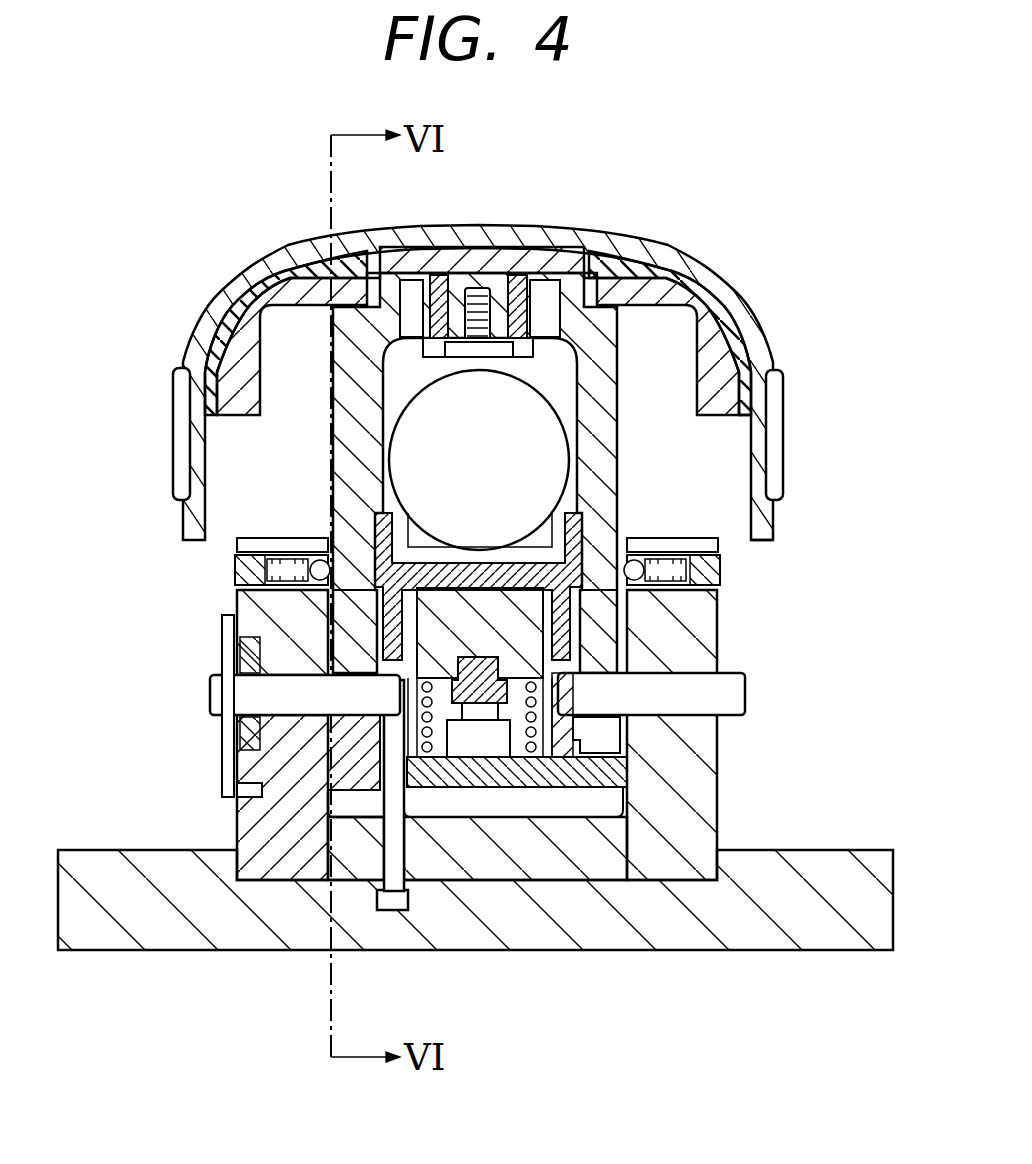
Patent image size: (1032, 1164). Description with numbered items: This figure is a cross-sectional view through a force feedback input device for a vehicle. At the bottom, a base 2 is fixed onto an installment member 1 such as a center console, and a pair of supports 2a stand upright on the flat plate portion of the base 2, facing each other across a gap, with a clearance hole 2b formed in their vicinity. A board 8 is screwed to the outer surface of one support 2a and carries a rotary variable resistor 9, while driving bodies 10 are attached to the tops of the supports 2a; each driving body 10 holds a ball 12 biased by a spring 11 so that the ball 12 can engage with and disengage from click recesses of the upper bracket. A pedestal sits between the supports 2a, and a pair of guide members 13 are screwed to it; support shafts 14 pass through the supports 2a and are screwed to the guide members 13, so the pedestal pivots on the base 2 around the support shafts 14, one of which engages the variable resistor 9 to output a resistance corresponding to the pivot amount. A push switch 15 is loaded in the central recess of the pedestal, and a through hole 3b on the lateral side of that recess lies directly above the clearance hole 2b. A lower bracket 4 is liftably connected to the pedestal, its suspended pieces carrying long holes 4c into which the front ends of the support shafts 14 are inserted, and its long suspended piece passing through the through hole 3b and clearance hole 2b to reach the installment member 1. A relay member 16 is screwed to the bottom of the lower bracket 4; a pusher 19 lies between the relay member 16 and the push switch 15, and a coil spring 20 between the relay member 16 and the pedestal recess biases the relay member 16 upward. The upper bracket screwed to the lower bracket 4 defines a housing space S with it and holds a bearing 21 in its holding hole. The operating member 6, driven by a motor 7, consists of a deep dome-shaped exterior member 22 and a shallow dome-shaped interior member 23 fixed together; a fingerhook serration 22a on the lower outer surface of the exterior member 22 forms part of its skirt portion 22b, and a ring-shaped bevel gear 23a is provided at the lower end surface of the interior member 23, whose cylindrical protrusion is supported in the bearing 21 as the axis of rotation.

The installment member 1 is at (872, 862).
The base 2 is at (652, 884).
The supports 2a is at (706, 818).
The clearance hole 2b is at (370, 818).
The through hole 3b is at (402, 792).
The lower bracket 4 is at (580, 517).
The long holes 4c is at (258, 666).
The operating member 6 is at (399, 369).
The motor 7 is at (606, 305).
The board 8 is at (232, 796).
The rotary variable resistor 9 is at (240, 742).
The driving bodies 10 is at (263, 570).
The spring 11 is at (283, 538).
The ball 12 is at (323, 537).
The guide members 13 is at (240, 797).
The support shafts 14 is at (232, 695).
The push switch 15 is at (483, 745).
The relay member 16 is at (457, 600).
The pusher 19 is at (440, 648).
The coil spring 20 is at (517, 752).
The bearing 21 is at (520, 273).
The exterior member 22 is at (233, 300).
The fingerhook serration 22a is at (258, 411).
The skirt portion 22b is at (770, 520).
The interior member 23 is at (212, 355).
The ring-shaped gear 23a is at (748, 425).
The housing space S is at (517, 410).